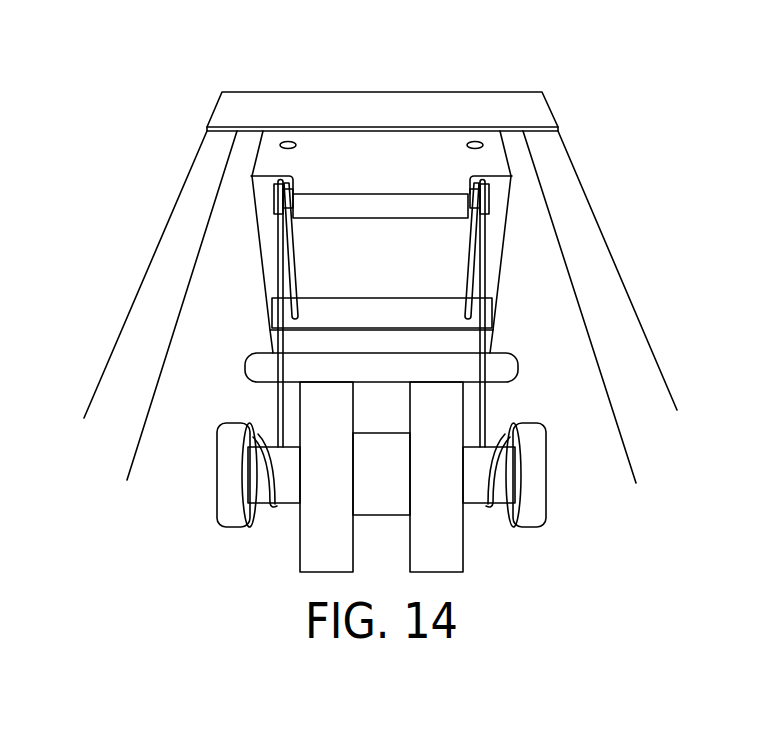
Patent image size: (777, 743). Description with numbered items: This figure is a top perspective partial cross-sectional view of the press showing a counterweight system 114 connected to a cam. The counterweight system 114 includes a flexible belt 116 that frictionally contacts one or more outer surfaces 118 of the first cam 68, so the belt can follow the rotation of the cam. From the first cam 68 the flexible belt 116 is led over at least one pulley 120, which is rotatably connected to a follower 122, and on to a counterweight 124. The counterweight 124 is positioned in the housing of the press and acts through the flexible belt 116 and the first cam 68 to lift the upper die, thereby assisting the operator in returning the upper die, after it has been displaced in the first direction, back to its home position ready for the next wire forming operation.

The counterweight system 114 is at (598, 95).
The follower 122 is at (345, 148).
The pulley 120 is at (287, 203).
The counterweight 124 is at (440, 312).
The flexible belt 116 is at (271, 510).
The outer surfaces 118 is at (473, 493).
The first cam 68 is at (318, 560).